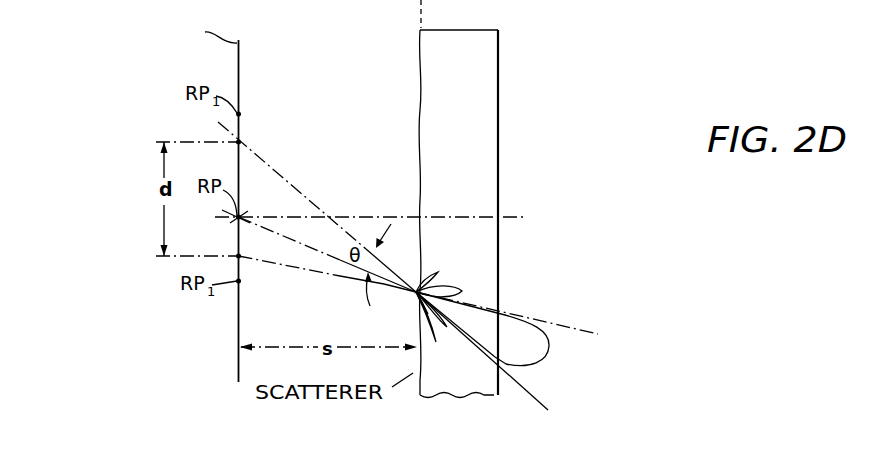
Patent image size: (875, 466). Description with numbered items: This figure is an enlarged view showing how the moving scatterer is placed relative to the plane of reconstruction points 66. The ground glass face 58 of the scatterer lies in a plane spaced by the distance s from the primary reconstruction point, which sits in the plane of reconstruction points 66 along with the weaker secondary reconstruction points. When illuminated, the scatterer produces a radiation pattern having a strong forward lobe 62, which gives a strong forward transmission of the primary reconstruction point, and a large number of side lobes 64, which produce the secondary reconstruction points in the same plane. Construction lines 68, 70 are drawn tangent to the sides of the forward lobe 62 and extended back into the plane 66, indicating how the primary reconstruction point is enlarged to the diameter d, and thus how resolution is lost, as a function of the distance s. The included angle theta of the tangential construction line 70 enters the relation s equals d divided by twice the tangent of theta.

The ground glass face 58 is at (419, 104).
The forward lobe 62 is at (547, 356).
The side lobes 64 is at (449, 287).
The plane of reconstruction points 66 is at (241, 50).
The construction line 68 is at (302, 196).
The tangential construction line 70 is at (321, 272).